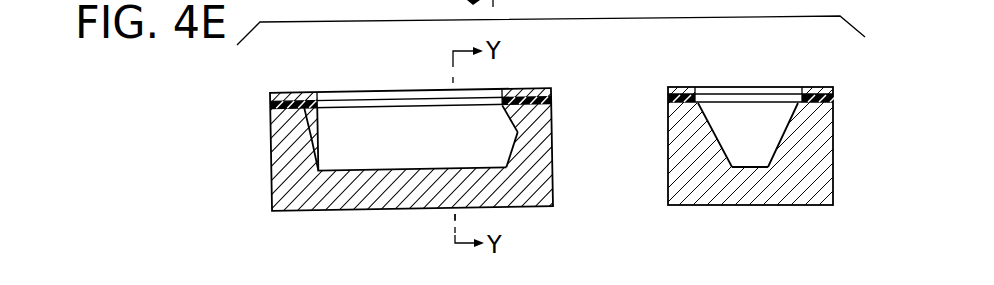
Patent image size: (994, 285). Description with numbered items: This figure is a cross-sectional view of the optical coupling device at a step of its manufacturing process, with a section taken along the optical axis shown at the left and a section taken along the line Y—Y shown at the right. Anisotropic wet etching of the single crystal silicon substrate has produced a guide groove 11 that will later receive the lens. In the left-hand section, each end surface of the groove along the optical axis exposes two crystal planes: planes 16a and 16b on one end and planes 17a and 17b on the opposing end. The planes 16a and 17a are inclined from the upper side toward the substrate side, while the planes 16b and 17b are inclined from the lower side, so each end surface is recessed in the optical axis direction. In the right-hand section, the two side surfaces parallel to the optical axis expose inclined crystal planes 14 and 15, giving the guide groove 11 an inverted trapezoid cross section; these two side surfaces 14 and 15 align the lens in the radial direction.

The guide groove 11 is at (399, 128).
The {111} plane (side surface) 14 is at (728, 131).
The {111} plane (side surface) 15 is at (764, 131).
The {111} plane (upper, one end surface) 16a is at (304, 131).
The {111} plane (lower, one end surface) 16b is at (310, 160).
The {111} plane (upper, other end surface) 17a is at (515, 130).
The {111} plane (lower, other end surface) 17b is at (511, 158).